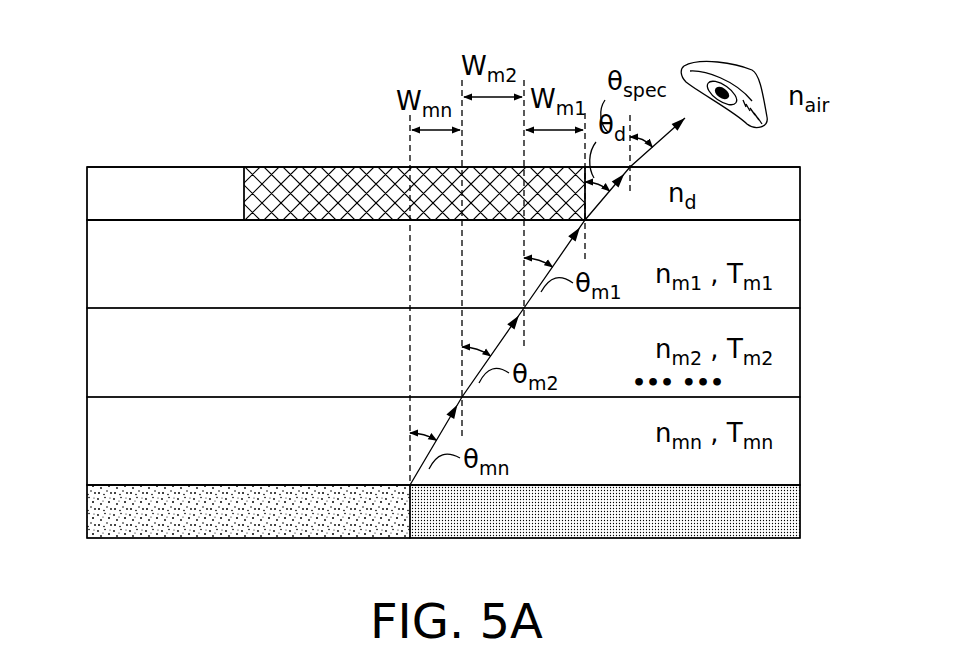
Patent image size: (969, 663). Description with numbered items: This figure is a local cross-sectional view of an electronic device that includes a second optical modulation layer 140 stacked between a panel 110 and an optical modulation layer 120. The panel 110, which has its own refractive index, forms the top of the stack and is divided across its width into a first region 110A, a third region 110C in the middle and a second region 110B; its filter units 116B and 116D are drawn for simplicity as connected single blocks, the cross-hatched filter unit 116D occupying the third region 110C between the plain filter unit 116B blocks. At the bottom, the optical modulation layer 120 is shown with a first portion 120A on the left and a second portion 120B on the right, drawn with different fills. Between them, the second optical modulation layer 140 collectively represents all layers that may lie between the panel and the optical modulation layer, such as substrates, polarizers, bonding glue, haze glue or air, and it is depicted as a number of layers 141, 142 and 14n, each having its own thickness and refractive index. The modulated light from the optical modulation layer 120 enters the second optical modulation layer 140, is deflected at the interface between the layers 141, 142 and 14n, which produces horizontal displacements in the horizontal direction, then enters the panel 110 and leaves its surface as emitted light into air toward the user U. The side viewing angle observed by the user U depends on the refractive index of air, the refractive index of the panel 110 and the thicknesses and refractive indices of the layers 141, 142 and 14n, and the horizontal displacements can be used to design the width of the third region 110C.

The panel 110 is at (76, 193).
The first region of the panel 110A is at (244, 39).
The second region of the panel 110B is at (800, 39).
The third region of the panel 110C is at (585, 39).
The filter unit 116B is at (158, 183).
The filter unit 116D is at (315, 185).
The second optical modulation layer 140 is at (810, 350).
The first layer of the second optical modulation layer 141 is at (113, 263).
The second layer of the second optical modulation layer 142 is at (113, 353).
The n-th layer of the second optical modulation layer 14n is at (113, 441).
The optical modulation layer 120 is at (75, 511).
The first portion of the optical modulation layer 120A is at (410, 553).
The second portion of the optical modulation layer 120B is at (800, 553).
The user U is at (776, 121).